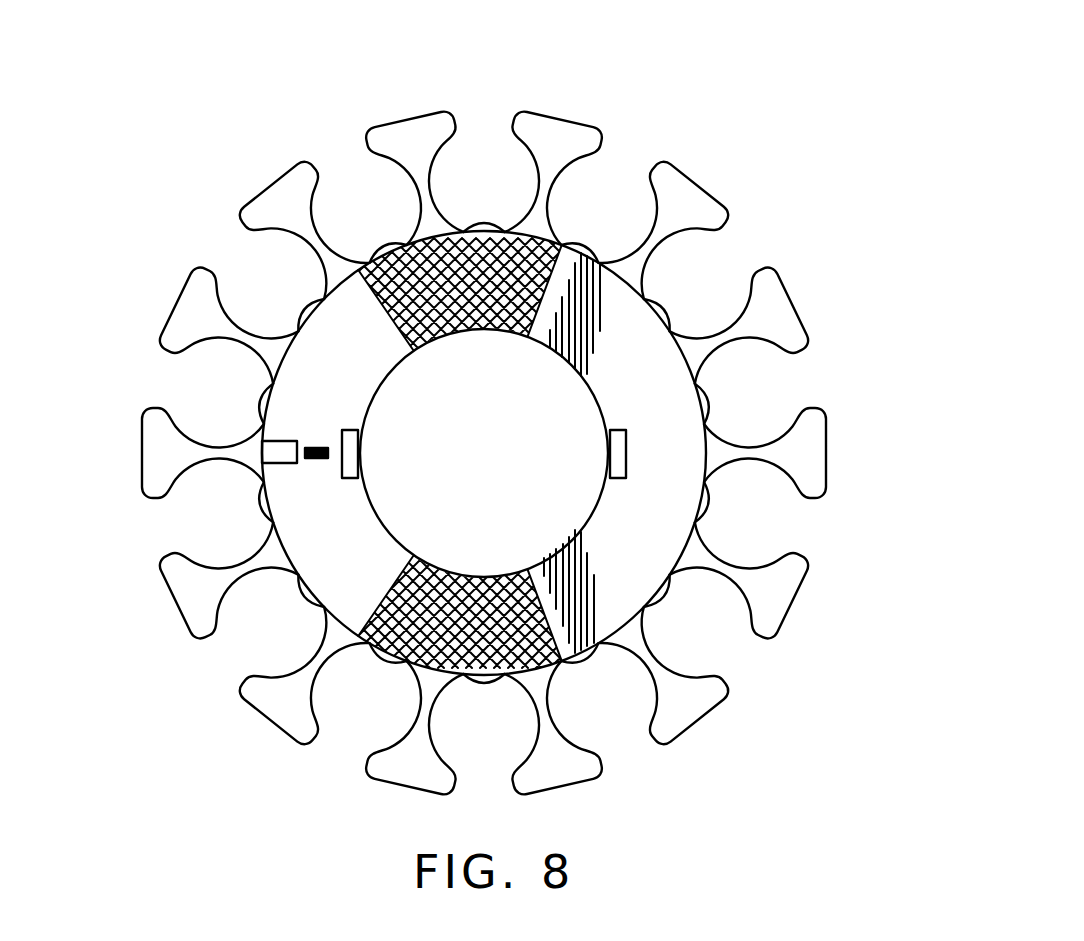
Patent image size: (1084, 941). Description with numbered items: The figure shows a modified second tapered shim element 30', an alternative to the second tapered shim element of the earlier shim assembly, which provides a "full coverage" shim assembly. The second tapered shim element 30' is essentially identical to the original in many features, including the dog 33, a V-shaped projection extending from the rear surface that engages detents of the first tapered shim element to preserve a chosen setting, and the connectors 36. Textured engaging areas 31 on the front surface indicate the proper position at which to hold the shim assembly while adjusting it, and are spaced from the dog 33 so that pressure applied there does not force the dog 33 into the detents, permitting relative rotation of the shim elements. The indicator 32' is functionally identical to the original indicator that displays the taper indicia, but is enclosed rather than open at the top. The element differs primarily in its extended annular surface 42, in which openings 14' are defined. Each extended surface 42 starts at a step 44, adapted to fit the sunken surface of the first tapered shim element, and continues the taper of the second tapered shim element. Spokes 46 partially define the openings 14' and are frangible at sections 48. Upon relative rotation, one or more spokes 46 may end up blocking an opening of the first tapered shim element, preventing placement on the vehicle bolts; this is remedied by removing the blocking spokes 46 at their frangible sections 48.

The modified second tapered shim element 30' is at (492, 422).
The textured engaging areas 31 is at (497, 680).
The indicator 32' is at (187, 398).
The dog 33 is at (313, 458).
The connectors 36 is at (358, 447).
The extended annular surface 42 is at (806, 456).
The step 44 is at (745, 538).
The spokes 46 is at (650, 648).
The frangible sections 48 is at (560, 663).
The openings 14' is at (505, 481).